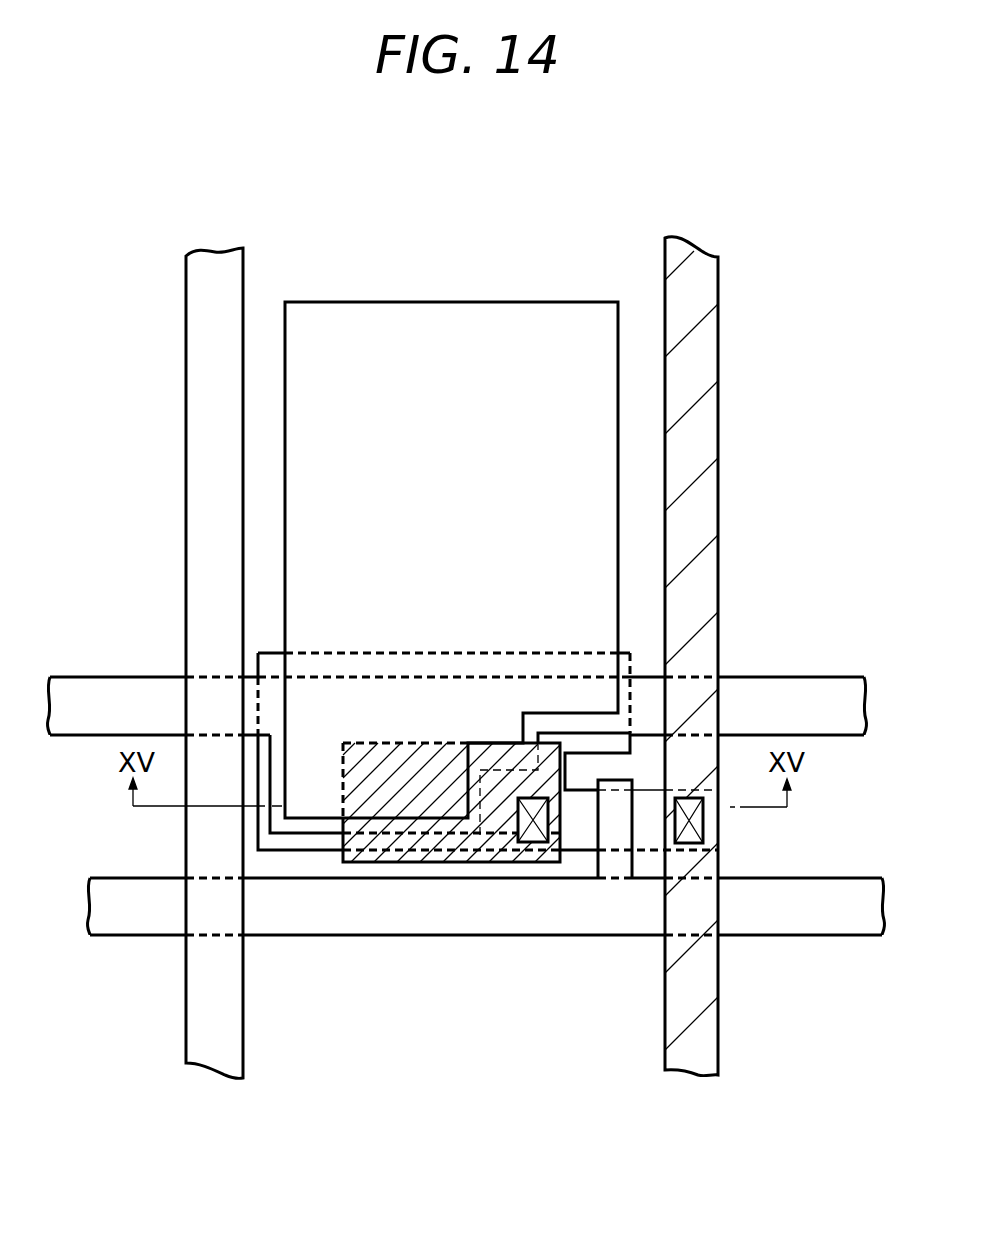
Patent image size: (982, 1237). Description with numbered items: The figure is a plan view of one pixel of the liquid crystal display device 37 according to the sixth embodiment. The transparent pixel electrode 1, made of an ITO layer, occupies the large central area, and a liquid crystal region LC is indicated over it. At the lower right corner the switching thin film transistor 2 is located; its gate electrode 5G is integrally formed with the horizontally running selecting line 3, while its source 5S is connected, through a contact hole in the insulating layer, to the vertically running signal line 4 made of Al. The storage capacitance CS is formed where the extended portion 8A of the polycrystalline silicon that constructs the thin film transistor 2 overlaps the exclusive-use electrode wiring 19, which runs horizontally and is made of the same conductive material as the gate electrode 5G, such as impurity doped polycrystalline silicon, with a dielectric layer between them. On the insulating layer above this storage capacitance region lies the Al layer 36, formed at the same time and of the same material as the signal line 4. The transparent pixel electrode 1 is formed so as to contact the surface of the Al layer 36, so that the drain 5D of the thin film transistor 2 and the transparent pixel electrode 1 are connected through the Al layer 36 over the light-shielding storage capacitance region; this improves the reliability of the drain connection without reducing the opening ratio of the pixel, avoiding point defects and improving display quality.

The transparent pixel electrode 1 is at (373, 333).
The switching thin film transistor 2 is at (580, 830).
The selecting line 3 is at (823, 937).
The signal line 4 is at (203, 388).
The drain 5D is at (527, 845).
The gate electrode 5G is at (612, 815).
The source 5S is at (655, 830).
The extended portion of the polycrystalline silicon 8A is at (360, 668).
The storage-capacitance-exclusive-use electrode wiring 19 is at (827, 676).
The Al layer 36 is at (418, 743).
The liquid crystal display device 37 is at (826, 538).
The liquid crystal LC is at (525, 298).
The storage capacitance CS is at (422, 677).